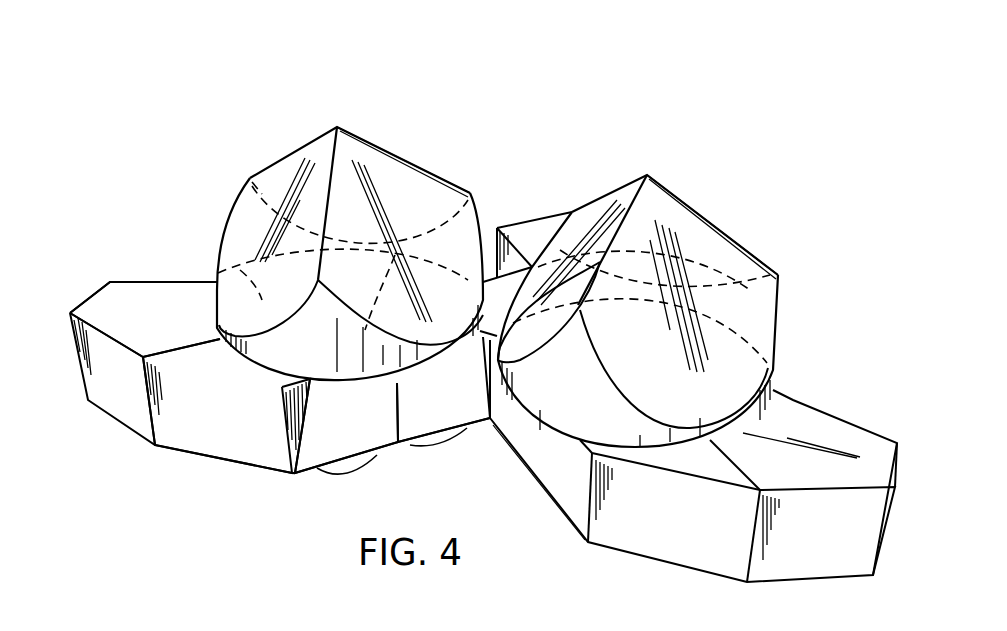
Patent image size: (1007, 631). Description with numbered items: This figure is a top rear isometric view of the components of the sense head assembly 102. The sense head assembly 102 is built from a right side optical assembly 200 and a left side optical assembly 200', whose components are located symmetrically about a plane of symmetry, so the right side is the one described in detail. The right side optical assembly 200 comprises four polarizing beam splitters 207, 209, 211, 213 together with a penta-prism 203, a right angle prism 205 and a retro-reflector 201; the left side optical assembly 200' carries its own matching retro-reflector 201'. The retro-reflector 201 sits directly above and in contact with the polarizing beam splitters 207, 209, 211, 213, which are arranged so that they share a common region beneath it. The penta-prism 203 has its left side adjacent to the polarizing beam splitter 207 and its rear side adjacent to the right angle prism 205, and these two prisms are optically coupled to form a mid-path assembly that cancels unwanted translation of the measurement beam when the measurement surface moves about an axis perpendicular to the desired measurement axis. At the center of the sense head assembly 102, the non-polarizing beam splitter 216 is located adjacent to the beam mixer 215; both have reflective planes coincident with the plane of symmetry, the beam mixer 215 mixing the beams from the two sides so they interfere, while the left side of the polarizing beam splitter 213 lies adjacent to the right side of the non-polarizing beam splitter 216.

The sense head assembly 102 is at (570, 117).
The right side optical assembly 200 is at (297, 230).
The left side optical assembly 200' is at (691, 292).
The retro-reflector 201 is at (403, 138).
The retro-reflector 201' is at (723, 227).
The penta-prism 203 is at (168, 318).
The right angle prism 205 is at (247, 424).
The polarizing beam splitter 207 is at (240, 270).
The polarizing beam splitter 209 is at (395, 255).
The polarizing beam splitter 211 is at (363, 423).
The polarizing beam splitter 213 is at (463, 402).
The beam mixer 215 is at (542, 237).
The non-polarizing beam splitter 216 is at (505, 287).